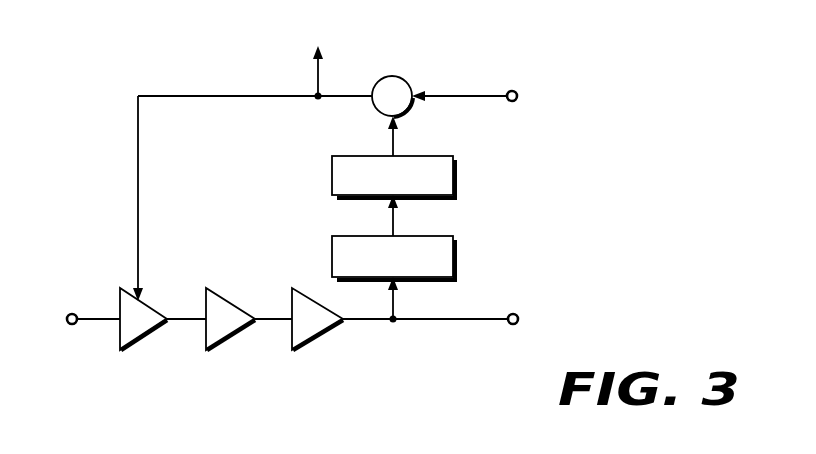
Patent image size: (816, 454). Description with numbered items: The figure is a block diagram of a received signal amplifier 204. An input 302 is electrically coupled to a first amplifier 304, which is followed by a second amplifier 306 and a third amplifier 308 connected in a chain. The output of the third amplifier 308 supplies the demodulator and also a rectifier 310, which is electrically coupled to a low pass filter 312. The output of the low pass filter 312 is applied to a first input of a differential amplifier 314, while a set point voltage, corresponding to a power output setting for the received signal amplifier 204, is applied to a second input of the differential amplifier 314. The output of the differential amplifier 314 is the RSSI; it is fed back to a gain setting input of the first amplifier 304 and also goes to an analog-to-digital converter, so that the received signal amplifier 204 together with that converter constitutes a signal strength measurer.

The received signal amplifier 204 is at (704, 354).
The input 302 is at (71, 312).
The first amplifier 304 is at (150, 338).
The second amplifier 306 is at (236, 338).
The third amplifier 308 is at (322, 338).
The rectifier 310 is at (459, 258).
The low pass filter 312 is at (459, 172).
The differential amplifier 314 is at (412, 108).